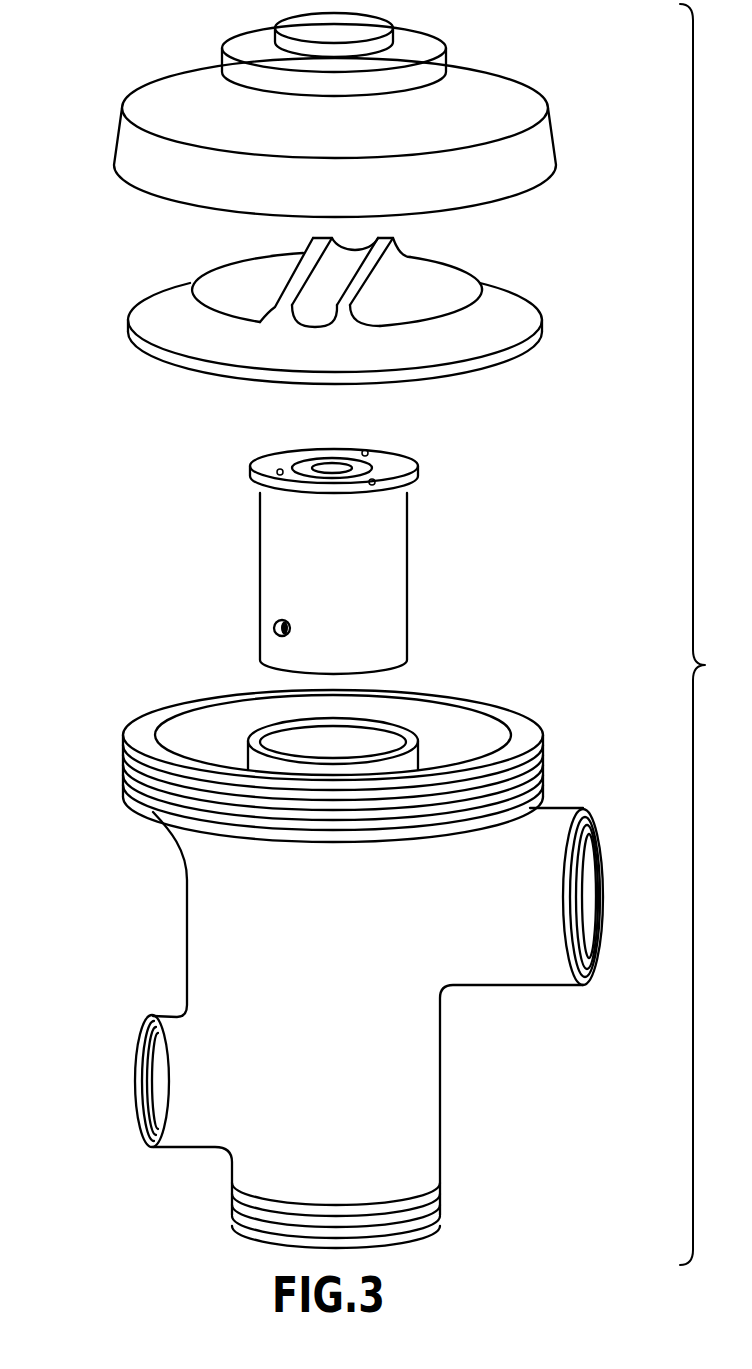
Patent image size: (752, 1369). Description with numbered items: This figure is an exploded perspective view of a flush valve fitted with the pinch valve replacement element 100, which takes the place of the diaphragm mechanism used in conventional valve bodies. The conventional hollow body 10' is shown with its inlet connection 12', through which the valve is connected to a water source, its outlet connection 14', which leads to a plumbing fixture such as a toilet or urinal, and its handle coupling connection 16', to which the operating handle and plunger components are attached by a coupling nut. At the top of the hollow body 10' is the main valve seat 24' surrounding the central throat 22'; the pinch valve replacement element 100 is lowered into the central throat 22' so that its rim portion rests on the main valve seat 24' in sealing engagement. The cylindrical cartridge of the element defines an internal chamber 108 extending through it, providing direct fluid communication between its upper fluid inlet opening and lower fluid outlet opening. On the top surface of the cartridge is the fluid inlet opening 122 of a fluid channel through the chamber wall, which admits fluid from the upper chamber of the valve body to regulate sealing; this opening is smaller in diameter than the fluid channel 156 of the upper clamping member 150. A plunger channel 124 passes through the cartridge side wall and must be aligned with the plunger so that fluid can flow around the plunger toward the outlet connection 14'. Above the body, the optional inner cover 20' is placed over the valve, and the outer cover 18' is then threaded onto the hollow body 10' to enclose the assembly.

The hollow body 10' is at (401, 957).
The inlet connection 12' is at (621, 912).
The outlet connection 14' is at (373, 1228).
The handle coupling connection 16' is at (158, 1105).
The outer cover 18' is at (305, 115).
The inner cover 20' is at (298, 311).
The central throat 22' is at (308, 705).
The main valve seat 24' is at (325, 725).
The pinch valve replacement element 100 is at (356, 540).
The internal chamber 108 is at (397, 608).
The fluid inlet opening 122 is at (277, 470).
The plunger channel 124 is at (276, 622).
The upper clamping member 150 is at (367, 468).
The fluid channel 156 is at (328, 462).